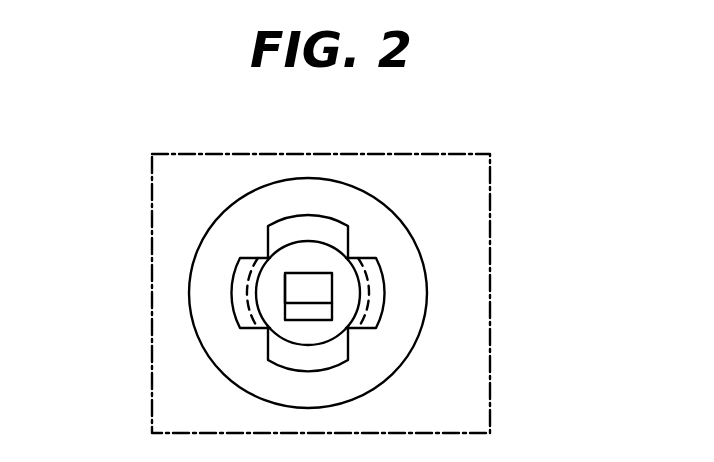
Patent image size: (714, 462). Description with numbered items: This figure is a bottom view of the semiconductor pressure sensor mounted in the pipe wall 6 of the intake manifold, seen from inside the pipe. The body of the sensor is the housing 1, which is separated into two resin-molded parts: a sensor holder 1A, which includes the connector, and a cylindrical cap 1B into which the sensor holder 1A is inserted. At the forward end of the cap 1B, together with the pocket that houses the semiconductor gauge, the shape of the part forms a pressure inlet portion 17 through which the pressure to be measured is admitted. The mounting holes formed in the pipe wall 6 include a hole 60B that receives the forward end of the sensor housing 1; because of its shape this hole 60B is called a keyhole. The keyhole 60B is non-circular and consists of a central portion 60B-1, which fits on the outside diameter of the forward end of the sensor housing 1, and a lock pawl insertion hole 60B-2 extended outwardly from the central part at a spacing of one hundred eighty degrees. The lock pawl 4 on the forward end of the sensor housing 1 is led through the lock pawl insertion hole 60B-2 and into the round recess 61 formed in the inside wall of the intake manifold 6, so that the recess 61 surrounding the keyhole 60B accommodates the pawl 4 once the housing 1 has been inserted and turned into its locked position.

The pipe wall 6 is at (208, 173).
The lock pawl insertion hole 60B-2 is at (336, 232).
The central portion 60B-1 is at (370, 275).
The hole 60B is at (575, 153).
The round recess 61 is at (412, 285).
The lock pawl 4 is at (333, 318).
The pressure inlet portion 17 is at (315, 313).
The housing 1 is at (92, 235).
The sensor holder 1A is at (283, 290).
The cap 1B is at (255, 300).